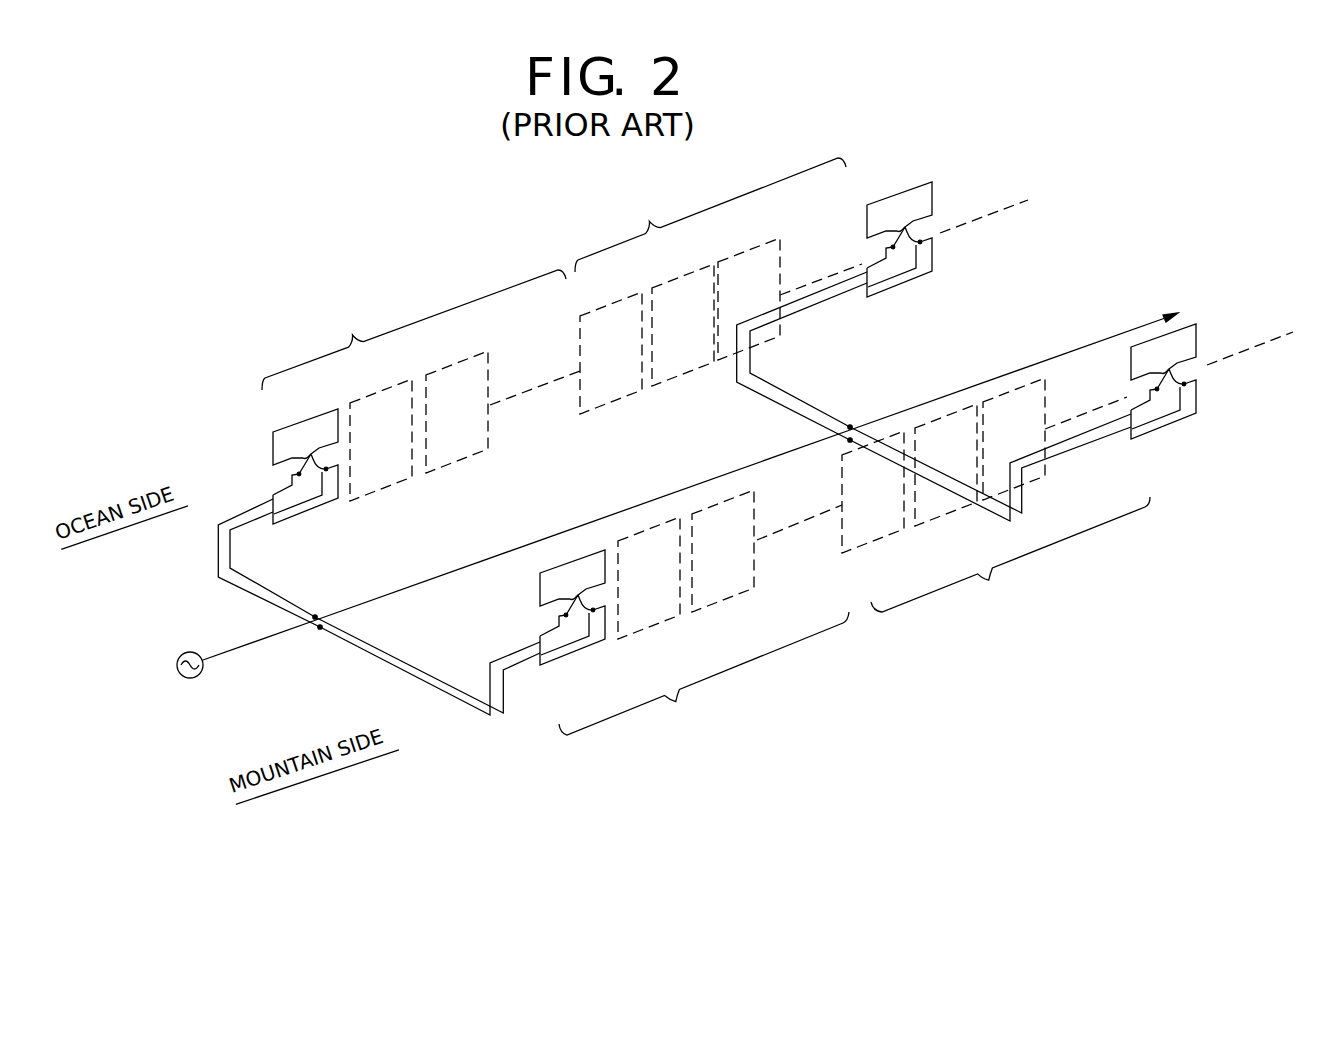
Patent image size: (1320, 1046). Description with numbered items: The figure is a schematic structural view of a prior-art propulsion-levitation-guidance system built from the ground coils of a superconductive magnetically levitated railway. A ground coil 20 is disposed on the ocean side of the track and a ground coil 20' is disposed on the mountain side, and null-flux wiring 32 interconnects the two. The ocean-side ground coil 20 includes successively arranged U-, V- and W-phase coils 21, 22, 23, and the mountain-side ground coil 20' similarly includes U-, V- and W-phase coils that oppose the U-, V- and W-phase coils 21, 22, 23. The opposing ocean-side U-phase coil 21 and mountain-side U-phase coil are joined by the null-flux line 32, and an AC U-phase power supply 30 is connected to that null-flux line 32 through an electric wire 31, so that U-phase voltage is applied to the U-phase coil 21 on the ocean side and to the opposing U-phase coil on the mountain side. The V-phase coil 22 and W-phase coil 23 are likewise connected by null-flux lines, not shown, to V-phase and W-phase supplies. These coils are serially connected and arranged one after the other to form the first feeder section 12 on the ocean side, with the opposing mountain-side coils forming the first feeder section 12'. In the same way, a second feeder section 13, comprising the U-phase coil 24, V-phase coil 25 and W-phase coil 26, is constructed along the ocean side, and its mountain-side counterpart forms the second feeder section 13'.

The first feeder section 12 is at (414, 342).
The second feeder section 13 is at (710, 227).
The first feeder section 12' is at (704, 619).
The second feeder section 13' is at (996, 504).
The ground coil 20 is at (588, 397).
The ground coil 20' is at (890, 594).
The U-phase coil 21 is at (316, 518).
The V-phase coil 22 is at (388, 492).
The W-phase coil 23 is at (460, 462).
The U-phase coil 24 is at (612, 403).
The V-phase coil 25 is at (687, 377).
The W-phase coil 26 is at (772, 341).
The AC U-phase power supply 30 is at (200, 678).
The electric wire 31 is at (270, 640).
The null-flux wiring 32 is at (391, 670).